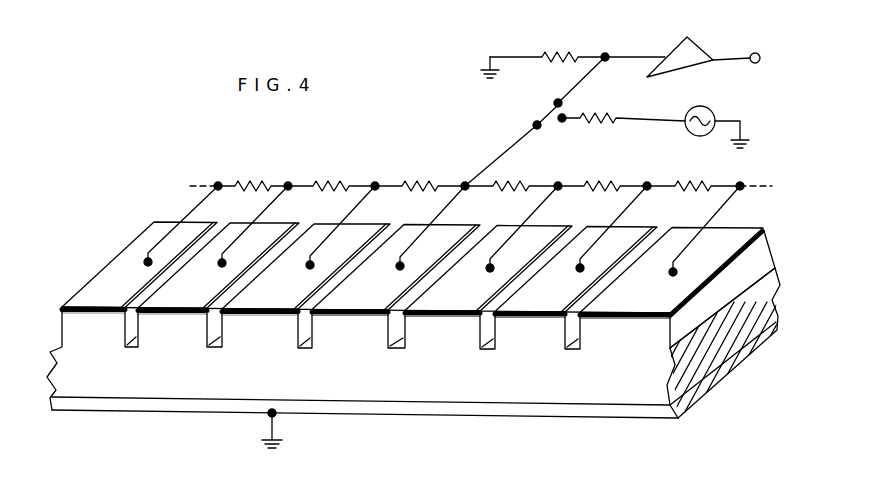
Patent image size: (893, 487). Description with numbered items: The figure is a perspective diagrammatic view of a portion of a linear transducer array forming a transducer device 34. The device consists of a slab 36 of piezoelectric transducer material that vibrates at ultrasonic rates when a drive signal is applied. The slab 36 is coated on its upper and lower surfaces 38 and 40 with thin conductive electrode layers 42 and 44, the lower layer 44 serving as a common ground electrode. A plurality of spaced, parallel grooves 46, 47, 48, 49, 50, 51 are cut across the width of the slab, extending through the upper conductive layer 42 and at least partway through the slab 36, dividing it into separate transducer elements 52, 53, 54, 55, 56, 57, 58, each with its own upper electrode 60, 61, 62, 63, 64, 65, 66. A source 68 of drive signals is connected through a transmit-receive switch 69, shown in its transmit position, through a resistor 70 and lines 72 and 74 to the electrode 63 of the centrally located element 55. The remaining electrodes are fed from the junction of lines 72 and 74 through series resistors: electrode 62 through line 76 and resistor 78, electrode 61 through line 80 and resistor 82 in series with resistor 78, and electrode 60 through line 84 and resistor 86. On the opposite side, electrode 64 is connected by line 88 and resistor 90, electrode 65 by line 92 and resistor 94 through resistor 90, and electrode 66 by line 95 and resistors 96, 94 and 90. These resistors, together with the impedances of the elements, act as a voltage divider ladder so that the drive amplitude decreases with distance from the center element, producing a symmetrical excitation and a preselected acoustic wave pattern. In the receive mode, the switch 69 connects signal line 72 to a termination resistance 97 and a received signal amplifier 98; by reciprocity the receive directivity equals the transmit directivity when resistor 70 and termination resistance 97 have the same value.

The transducer device 34 is at (72, 280).
The slab 36 is at (66, 368).
The upper surface 38 is at (78, 318).
The lower surface 40 is at (70, 392).
The upper conductive layer 42 is at (68, 313).
The lower electrode layer 44 is at (542, 413).
The groove 46 is at (136, 348).
The groove 47 is at (221, 348).
The groove 48 is at (312, 350).
The groove 49 is at (390, 349).
The groove 50 is at (482, 349).
The groove 51 is at (568, 349).
The transducer element 52 is at (74, 352).
The transducer element 53 is at (159, 352).
The transducer element 54 is at (244, 352).
The transducer element 55 is at (339, 356).
The transducer element 56 is at (429, 356).
The transducer element 57 is at (517, 356).
The transducer element 58 is at (617, 356).
The upper electrode 60 is at (136, 246).
The upper electrode 61 is at (182, 298).
The upper electrode 62 is at (270, 298).
The upper electrode 63 is at (359, 300).
The upper electrode 64 is at (449, 300).
The upper electrode 65 is at (537, 300).
The upper electrode 66 is at (629, 303).
The source 68 is at (702, 106).
The transmit-receive switch 69 is at (546, 106).
The resistor 70 is at (589, 113).
The line 72 is at (512, 143).
The line 74 is at (450, 204).
The line 76 is at (360, 204).
The line 80 is at (273, 203).
The line 84 is at (195, 210).
The line 88 is at (541, 206).
The line 92 is at (632, 205).
The line 95 is at (733, 205).
The resistor 78 is at (410, 181).
The resistor 82 is at (321, 181).
The resistor 86 is at (245, 181).
The resistor 90 is at (520, 181).
The resistor 94 is at (606, 181).
The resistor 96 is at (702, 181).
The termination resistance 97 is at (561, 52).
The received signal amplifier 98 is at (695, 50).